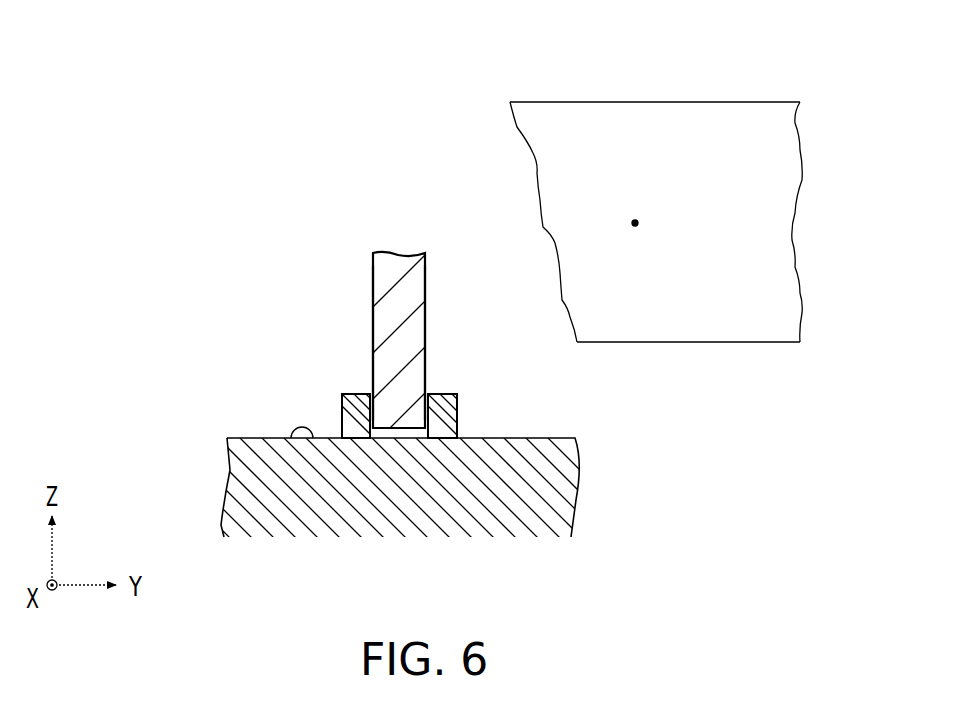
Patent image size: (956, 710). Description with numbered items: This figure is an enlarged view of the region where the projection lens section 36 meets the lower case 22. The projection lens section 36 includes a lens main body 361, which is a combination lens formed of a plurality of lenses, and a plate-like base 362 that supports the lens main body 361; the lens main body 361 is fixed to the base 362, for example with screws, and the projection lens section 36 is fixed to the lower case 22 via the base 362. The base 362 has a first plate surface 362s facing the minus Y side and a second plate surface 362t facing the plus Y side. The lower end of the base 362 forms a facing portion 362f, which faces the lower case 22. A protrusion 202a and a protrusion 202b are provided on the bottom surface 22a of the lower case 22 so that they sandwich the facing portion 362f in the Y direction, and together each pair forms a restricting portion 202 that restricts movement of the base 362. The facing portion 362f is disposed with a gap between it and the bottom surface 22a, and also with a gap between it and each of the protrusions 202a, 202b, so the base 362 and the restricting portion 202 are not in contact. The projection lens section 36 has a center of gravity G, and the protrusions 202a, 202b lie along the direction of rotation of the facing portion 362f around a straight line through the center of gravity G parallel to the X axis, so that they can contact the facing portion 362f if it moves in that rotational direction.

The lower case 22 is at (557, 489).
The bottom surface 22a is at (291, 440).
The restricting portion 202 is at (430, 383).
The protrusion 202a is at (353, 402).
The protrusion 202b is at (445, 419).
The base 362 is at (397, 392).
The first plate surface 362s is at (373, 300).
The second plate surface 362t is at (427, 284).
The facing portion 362f is at (399, 437).
The projection lens section 36 is at (656, 243).
The lens main body 361 is at (748, 322).
The center of gravity G is at (634, 218).